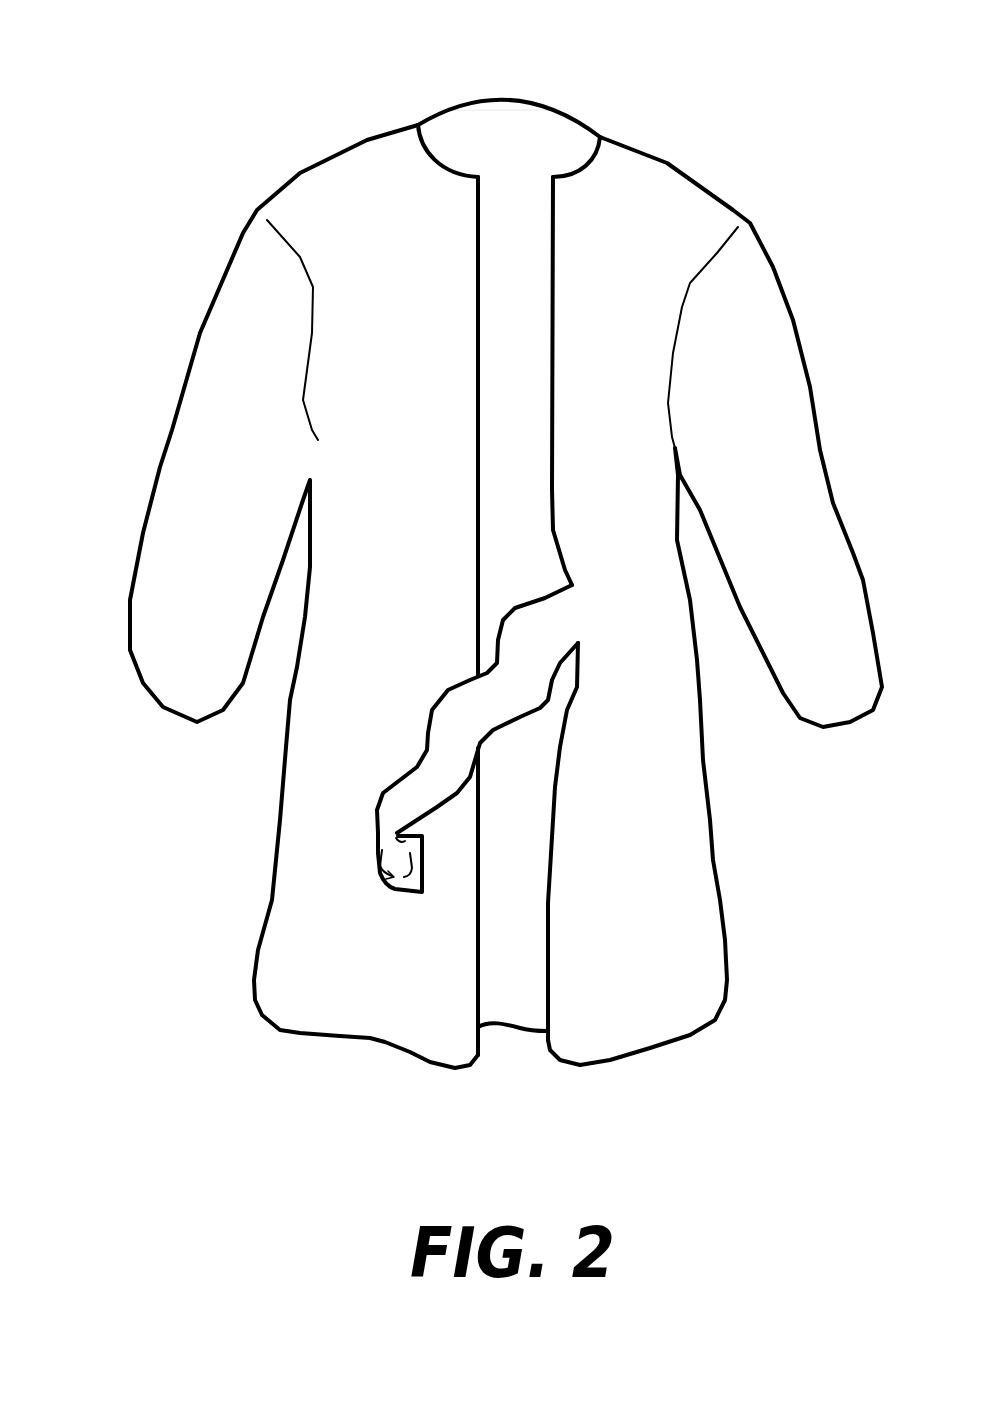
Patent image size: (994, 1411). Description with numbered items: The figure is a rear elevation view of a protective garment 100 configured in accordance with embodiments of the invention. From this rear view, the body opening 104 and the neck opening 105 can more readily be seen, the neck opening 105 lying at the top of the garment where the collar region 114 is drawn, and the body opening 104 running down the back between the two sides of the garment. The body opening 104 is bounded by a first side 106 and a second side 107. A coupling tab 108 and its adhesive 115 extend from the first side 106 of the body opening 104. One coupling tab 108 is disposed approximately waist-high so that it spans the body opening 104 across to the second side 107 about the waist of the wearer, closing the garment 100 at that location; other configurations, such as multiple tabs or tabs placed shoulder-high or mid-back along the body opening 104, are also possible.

The protective garment 100 is at (156, 245).
The body opening 104 is at (517, 830).
The neck opening 105 is at (498, 158).
The first side 106 is at (552, 483).
The second side 107 is at (476, 452).
The coupling tab 108 is at (450, 725).
The collar / neckline 114 is at (520, 107).
The adhesive 115 is at (377, 872).